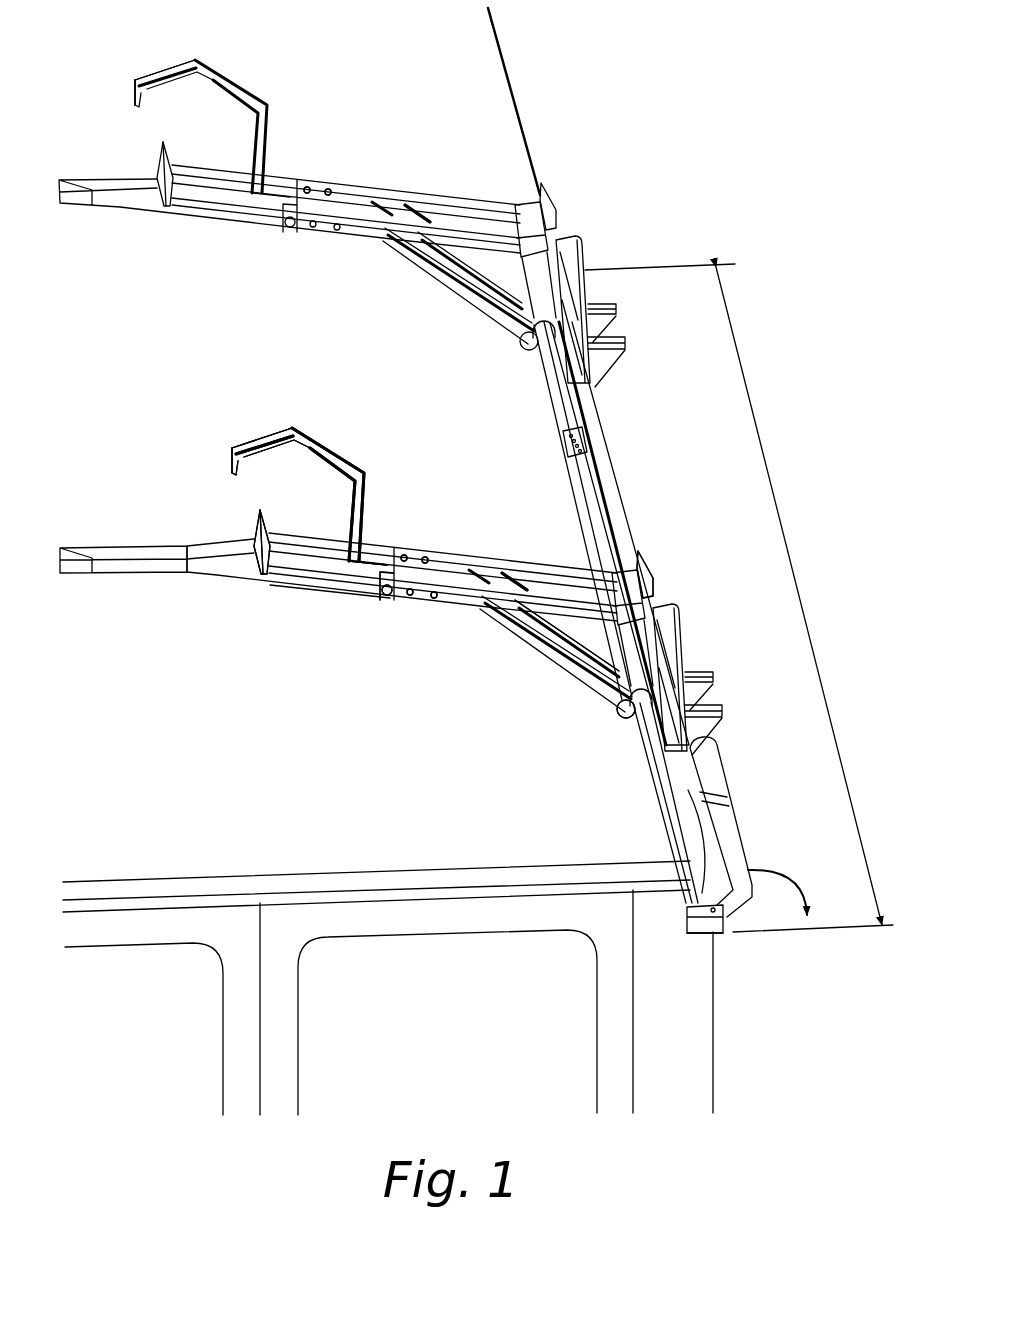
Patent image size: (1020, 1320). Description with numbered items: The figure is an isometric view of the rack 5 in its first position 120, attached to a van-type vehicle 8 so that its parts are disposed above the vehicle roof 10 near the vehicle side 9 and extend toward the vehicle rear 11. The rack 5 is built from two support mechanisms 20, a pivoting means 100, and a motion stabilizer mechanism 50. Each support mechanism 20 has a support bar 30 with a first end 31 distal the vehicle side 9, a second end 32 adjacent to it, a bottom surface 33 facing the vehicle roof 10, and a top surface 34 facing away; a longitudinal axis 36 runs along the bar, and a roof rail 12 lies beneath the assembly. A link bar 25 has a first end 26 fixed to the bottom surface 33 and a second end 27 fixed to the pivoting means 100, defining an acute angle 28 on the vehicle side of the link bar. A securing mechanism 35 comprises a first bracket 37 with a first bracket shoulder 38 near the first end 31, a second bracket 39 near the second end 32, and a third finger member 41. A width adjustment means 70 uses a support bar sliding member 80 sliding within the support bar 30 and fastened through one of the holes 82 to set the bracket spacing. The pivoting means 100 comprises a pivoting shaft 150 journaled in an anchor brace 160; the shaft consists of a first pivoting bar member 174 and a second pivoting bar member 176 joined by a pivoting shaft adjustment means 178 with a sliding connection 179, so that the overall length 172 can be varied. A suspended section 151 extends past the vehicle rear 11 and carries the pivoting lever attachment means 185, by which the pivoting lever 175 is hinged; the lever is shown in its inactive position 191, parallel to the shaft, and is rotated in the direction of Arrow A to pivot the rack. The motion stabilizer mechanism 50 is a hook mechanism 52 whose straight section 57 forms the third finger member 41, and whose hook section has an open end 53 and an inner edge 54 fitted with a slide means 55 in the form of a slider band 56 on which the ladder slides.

The rack 5 is at (608, 90).
The vehicle 8 is at (440, 944).
The vehicle side 9 is at (715, 982).
The vehicle roof 10 is at (280, 798).
The vehicle rear 11 is at (237, 920).
The roof rail 12 is at (117, 208).
The support mechanism 20 is at (563, 157).
The link bar 25 is at (490, 290).
The link bar first end 26 is at (497, 617).
The link bar second end 27 is at (630, 710).
The angle 28 is at (617, 647).
The support bar 30 is at (420, 192).
The support bar first end 31 is at (178, 210).
The support bar second end 32 is at (540, 248).
The support bar bottom surface 33 is at (410, 232).
The support bar top surface 34 is at (328, 240).
The securing mechanism 35 is at (292, 621).
The longitudinal axis 36 is at (213, 575).
The first bracket 37 is at (345, 600).
The first bracket shoulder 38 is at (253, 532).
The second bracket 39 is at (634, 568).
The third finger member 41 is at (282, 121).
The motion stabilizer mechanism 50 is at (212, 436).
The hook mechanism 52 is at (210, 92).
The open end 53 is at (150, 125).
The inner edge 54 is at (247, 113).
The slide means 55 is at (255, 496).
The slider band 56 is at (212, 86).
The straight section 57 is at (264, 150).
The width adjustment means 70 is at (388, 671).
The support bar sliding member 80 is at (398, 598).
The holes 82 is at (435, 600).
The pivoting means 100 is at (641, 472).
The first position 120 is at (700, 112).
The pivoting shaft 150 is at (582, 533).
The suspended section 151 is at (685, 917).
The anchor brace 160 is at (560, 293).
The overall length 172 is at (795, 558).
The first pivoting bar member 174 is at (660, 828).
The pivoting lever 175 is at (735, 842).
The second pivoting bar member 176 is at (562, 412).
The pivoting shaft adjustment means 178 is at (600, 432).
The sliding connection 179 is at (565, 455).
The pivoting lever attachment means 185 is at (735, 941).
The inactive position 191 is at (752, 815).
The Arrow A is at (800, 874).